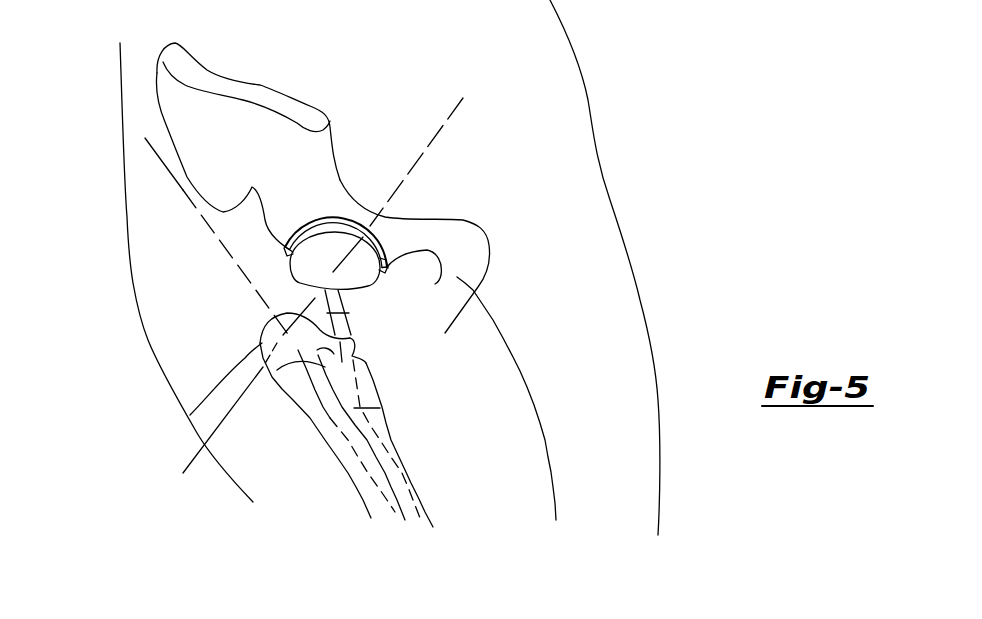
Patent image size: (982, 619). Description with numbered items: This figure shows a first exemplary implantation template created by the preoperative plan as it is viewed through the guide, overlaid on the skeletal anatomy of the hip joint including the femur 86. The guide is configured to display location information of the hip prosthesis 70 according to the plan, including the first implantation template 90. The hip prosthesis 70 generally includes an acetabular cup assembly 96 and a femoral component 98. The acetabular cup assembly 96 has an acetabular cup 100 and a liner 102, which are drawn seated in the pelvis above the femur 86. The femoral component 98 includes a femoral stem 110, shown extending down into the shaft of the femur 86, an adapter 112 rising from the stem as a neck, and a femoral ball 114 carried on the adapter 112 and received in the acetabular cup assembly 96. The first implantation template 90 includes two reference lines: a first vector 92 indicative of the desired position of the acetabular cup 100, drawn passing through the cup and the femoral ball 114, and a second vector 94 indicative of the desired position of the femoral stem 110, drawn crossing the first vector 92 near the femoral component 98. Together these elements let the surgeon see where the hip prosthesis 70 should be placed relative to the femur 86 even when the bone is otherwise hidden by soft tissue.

The hip prosthesis 70 is at (243, 333).
The femur 86 is at (190, 415).
The first implantation template 90 is at (218, 278).
The first vector 92 is at (437, 123).
The second vector 94 is at (172, 177).
The acetabular cup assembly 96 is at (334, 203).
The femoral component 98 is at (380, 346).
The acetabular cup 100 is at (292, 244).
The liner 102 is at (382, 266).
The femoral stem 110 is at (380, 408).
The adapter 112 is at (348, 318).
The femoral ball 114 is at (310, 262).